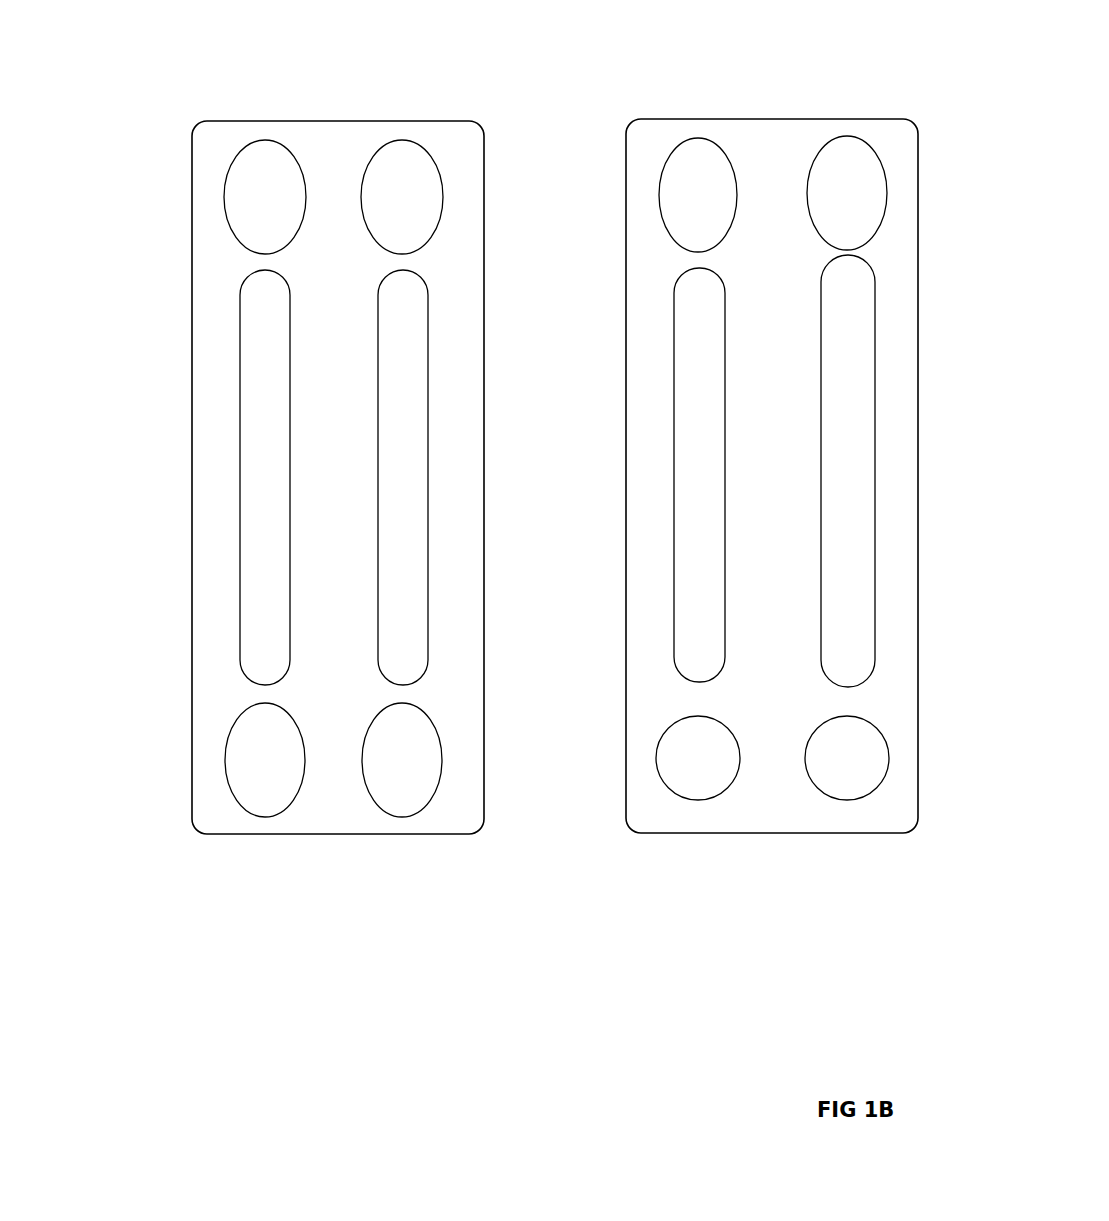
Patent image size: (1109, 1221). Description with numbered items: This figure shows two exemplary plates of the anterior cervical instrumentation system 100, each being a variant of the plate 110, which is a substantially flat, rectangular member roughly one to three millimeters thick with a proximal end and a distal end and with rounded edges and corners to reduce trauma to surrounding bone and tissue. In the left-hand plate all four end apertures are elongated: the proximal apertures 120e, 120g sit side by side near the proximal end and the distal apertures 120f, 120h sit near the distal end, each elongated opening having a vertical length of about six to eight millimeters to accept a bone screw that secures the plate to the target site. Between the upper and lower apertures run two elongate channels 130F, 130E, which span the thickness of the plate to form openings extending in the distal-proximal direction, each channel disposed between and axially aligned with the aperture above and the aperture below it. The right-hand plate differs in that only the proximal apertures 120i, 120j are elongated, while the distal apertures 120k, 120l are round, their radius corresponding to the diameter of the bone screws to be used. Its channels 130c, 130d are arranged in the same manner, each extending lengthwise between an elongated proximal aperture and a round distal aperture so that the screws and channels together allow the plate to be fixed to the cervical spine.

The anterior cervical instrumentation system 100 is at (341, 99).
The plate 110 is at (396, 477).
The elongated proximal aperture 120e is at (185, 180).
The elongated distal aperture 120f is at (184, 734).
The elongated proximal aperture 120g is at (492, 180).
The elongated distal aperture 120h is at (487, 744).
The elongated proximal aperture 120i is at (639, 195).
The elongated proximal aperture 120j is at (880, 163).
The round distal aperture 120k is at (637, 787).
The round distal aperture 120l is at (886, 801).
The channel 130F is at (196, 477).
The channel 130E is at (480, 477).
The channel 130c is at (630, 475).
The channel 130d is at (898, 471).